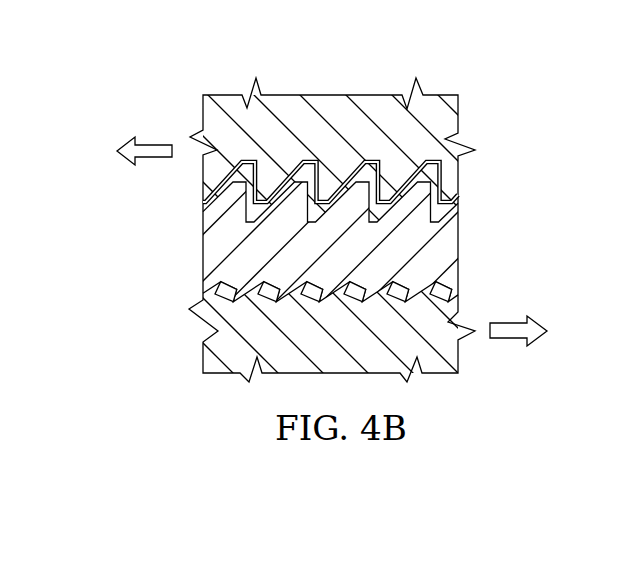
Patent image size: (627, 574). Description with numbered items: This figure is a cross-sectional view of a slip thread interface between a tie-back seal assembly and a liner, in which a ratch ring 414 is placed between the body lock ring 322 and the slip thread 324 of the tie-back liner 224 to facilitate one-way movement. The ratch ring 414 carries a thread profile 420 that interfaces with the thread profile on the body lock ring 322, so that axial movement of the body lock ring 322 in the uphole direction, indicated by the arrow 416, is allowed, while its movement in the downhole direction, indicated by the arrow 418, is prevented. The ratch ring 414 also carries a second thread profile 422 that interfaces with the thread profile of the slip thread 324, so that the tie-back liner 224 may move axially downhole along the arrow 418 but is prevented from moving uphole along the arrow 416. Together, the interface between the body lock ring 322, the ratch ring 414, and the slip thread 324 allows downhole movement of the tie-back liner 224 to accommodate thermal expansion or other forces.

The body lock ring 322 is at (352, 138).
The ratch ring 414 is at (352, 260).
The tie-back liner 224 is at (352, 347).
The slip thread 324 is at (208, 304).
The thread profile 420 is at (458, 231).
The thread profile 422 is at (458, 282).
The arrow 416 is at (153, 144).
The arrow 418 is at (508, 339).